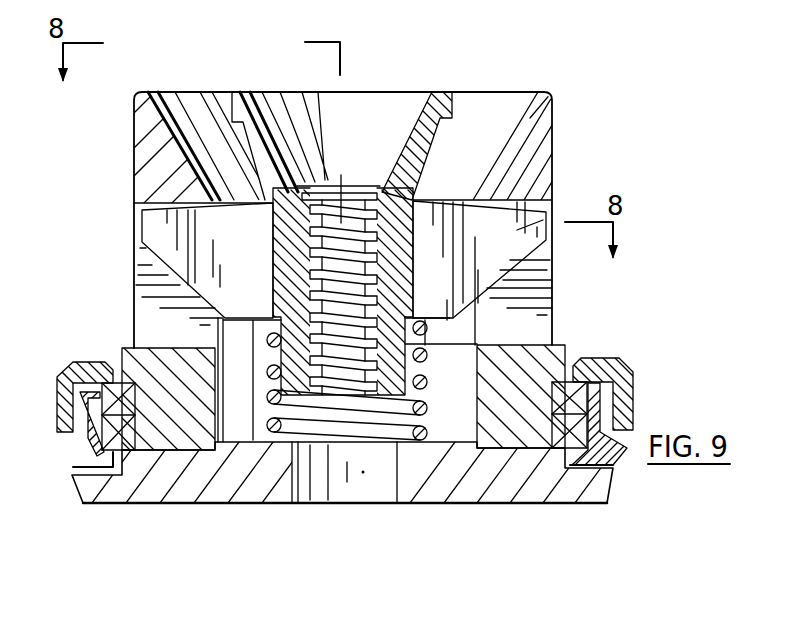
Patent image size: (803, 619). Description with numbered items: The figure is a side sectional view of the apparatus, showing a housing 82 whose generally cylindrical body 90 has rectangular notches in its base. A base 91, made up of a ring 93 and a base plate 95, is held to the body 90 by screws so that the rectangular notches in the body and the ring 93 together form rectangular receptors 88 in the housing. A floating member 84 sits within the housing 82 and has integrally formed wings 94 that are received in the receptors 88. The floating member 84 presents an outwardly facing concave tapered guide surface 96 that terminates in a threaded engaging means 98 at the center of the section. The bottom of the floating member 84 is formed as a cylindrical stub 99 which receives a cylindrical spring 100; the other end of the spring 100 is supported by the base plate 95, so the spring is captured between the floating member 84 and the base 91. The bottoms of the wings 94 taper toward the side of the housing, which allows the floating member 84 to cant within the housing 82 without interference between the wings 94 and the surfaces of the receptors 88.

The housing 82 is at (140, 132).
The floating member 84 is at (433, 138).
The rectangular receptors 88 is at (136, 249).
The body 90 is at (134, 165).
The base 91 is at (190, 511).
The ring 93 is at (134, 354).
The wings 94 is at (553, 210).
The base plate 95 is at (80, 490).
The concave tapered guide surface 96 is at (418, 135).
The threaded engaging means 98 is at (358, 212).
The cylindrical stub 99 is at (415, 374).
The cylindrical spring 100 is at (405, 403).